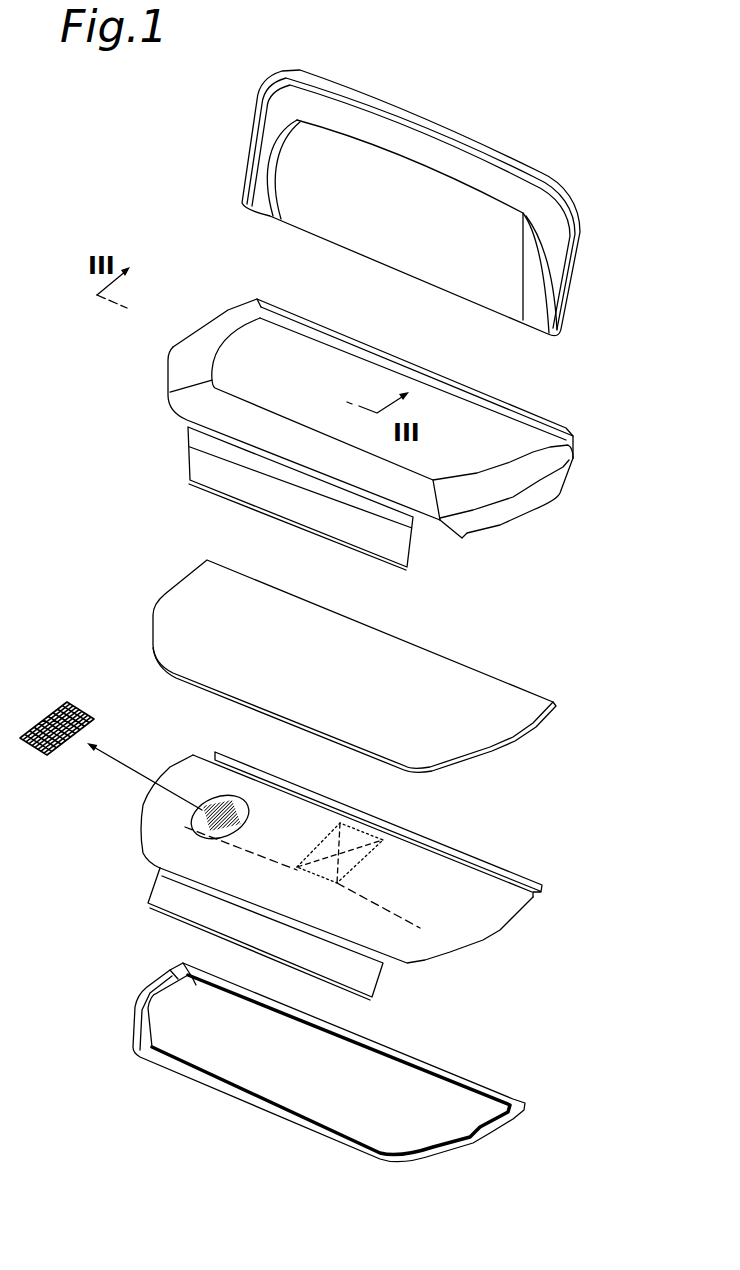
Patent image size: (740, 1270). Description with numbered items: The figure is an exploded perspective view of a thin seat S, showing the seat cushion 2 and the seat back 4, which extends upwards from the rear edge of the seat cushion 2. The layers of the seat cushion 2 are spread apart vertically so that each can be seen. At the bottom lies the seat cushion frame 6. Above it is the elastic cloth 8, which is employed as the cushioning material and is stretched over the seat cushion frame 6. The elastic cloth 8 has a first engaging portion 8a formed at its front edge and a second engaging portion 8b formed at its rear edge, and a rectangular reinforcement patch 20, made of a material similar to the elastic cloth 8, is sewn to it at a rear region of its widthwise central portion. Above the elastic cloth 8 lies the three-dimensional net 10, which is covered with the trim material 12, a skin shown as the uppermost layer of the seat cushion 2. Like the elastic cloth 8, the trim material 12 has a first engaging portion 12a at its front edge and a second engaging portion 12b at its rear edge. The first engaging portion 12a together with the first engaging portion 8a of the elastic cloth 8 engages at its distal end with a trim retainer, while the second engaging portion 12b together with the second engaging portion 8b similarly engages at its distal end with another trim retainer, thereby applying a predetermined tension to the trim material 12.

The thin seat S is at (552, 114).
The seat cushion 2 is at (635, 1060).
The seat back 4 is at (310, 180).
The seat cushion frame 6 is at (487, 1080).
The elastic cloth 8 is at (493, 907).
The first engaging portion 8a is at (180, 903).
The second engaging portion 8b is at (247, 763).
The 3-D net 10 is at (483, 705).
The trim material 12 is at (495, 441).
The first engaging portion 12a is at (217, 480).
The second engaging portion 12b is at (284, 318).
The rectangular reinforcement patch 20 is at (383, 840).